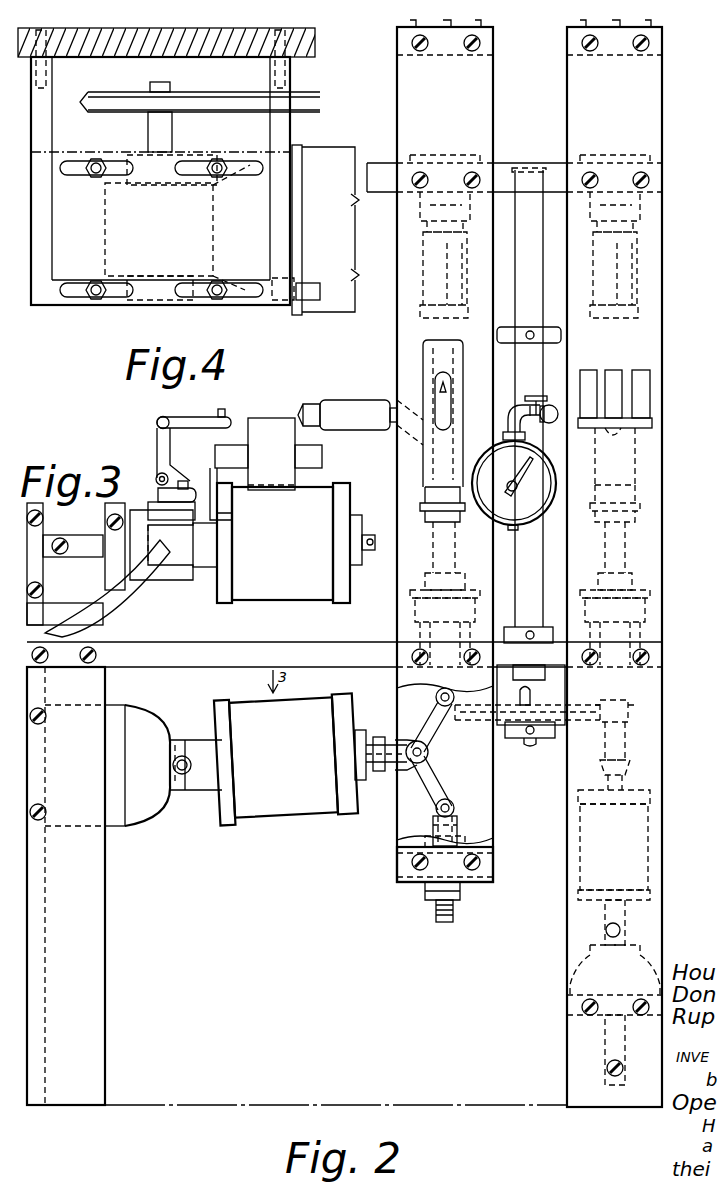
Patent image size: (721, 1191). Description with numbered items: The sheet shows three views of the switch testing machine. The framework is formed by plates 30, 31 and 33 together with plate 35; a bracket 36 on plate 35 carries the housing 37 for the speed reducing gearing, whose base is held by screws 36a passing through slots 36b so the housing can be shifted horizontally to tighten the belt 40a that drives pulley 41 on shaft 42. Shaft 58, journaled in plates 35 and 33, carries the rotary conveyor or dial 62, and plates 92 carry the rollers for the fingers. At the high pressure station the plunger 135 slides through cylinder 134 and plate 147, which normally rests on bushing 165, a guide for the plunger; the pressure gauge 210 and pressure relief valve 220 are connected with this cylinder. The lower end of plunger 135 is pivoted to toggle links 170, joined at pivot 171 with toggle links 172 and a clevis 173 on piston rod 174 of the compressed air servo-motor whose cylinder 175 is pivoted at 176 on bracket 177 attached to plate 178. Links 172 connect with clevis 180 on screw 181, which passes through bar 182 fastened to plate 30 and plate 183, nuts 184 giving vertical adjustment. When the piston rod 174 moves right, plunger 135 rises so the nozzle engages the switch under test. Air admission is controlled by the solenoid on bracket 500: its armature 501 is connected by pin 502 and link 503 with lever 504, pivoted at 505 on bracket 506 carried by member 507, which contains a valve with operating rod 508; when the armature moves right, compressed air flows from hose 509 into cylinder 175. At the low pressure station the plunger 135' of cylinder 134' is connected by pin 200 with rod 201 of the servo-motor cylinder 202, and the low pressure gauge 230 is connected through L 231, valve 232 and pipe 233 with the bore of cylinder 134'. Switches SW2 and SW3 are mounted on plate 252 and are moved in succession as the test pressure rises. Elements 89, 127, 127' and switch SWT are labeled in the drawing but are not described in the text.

In FIG. 4, the plate 35 is at (236, 57).
In FIG. 2, the plate 35 is at (372, 645).
In FIG. 4, the bracket 36 is at (122, 315).
In FIG. 4, the screws 36a is at (96, 177).
In FIG. 4, the slots 36b is at (72, 176).
In FIG. 4, the housing 37 is at (195, 159).
In FIG. 4, the belt 40a is at (84, 104).
In FIG. 4, the post 89 is at (172, 141).
In FIG. 3, the plate 178 is at (118, 499).
In FIG. 2, the plate 178 is at (120, 706).
In FIG. 3, the bracket 177 is at (170, 580).
In FIG. 2, the bracket 177 is at (168, 733).
In FIG. 2, the pivot 176 is at (186, 784).
In FIG. 3, the cylinder 175 is at (338, 482).
In FIG. 2, the cylinder 175 is at (282, 816).
In FIG. 3, the piston rod 174 is at (365, 545).
In FIG. 2, the piston rod 174 is at (363, 738).
In FIG. 2, the clevis 173 is at (385, 772).
In FIG. 3, the member 507 is at (208, 572).
In FIG. 3, the hose 509 is at (72, 593).
In FIG. 3, the bracket 500 is at (215, 472).
In FIG. 3, the armature 501 is at (236, 440).
In FIG. 3, the pin 502 is at (224, 409).
In FIG. 3, the link 503 is at (208, 418).
In FIG. 3, the lever 504 is at (170, 452).
In FIG. 3, the pivot 505 is at (160, 472).
In FIG. 3, the bracket 506 is at (166, 498).
In FIG. 3, the operating rod 508 is at (186, 486).
In FIG. 2, the plate 183 is at (493, 786).
In FIG. 2, the plate 31 is at (662, 789).
In FIG. 2, the plate 92 is at (420, 57).
In FIG. 2, the plate 33 is at (390, 192).
In FIG. 2, the shaft 58 is at (525, 200).
In FIG. 2, the rotary conveyor or dial 62 is at (497, 345).
In FIG. 2, the piston 127 is at (434, 262).
In FIG. 2, the piston 127' is at (646, 256).
In FIG. 2, the pressure gauge 210 is at (423, 352).
In FIG. 2, the pressure relief valve 220 is at (378, 398).
In FIG. 2, the low pressure gauge 230 is at (510, 525).
In FIG. 2, the L 231 is at (500, 412).
In FIG. 2, the valve 232 is at (535, 400).
In FIG. 2, the pipe 233 is at (560, 424).
In FIG. 2, the cylinder 134 is at (416, 503).
In FIG. 2, the cylinder 134' is at (629, 499).
In FIG. 2, the plunger 135 is at (418, 614).
In FIG. 2, the plunger 135' is at (652, 613).
In FIG. 2, the plate 147 is at (455, 590).
In FIG. 2, the bushing 165 is at (415, 612).
In FIG. 2, the switch SW3 is at (588, 371).
In FIG. 2, the switch SW2 is at (613, 375).
In FIG. 2, the switch SWT is at (641, 371).
In FIG. 2, the plate 252 is at (652, 423).
In FIG. 2, the toggle links 170 is at (432, 728).
In FIG. 2, the pivot 171 is at (428, 754).
In FIG. 2, the toggle links 172 is at (438, 782).
In FIG. 2, the clevis 180 is at (452, 812).
In FIG. 2, the nuts 184 is at (430, 834).
In FIG. 2, the plate 30 is at (440, 848).
In FIG. 2, the bar 182 is at (400, 868).
In FIG. 2, the screw 181 is at (451, 912).
In FIG. 2, the shaft 42 is at (532, 697).
In FIG. 2, the pulley 41 is at (556, 740).
In FIG. 2, the pin 200 is at (630, 708).
In FIG. 2, the rod 201 is at (630, 768).
In FIG. 2, the cylinder 202 is at (650, 849).